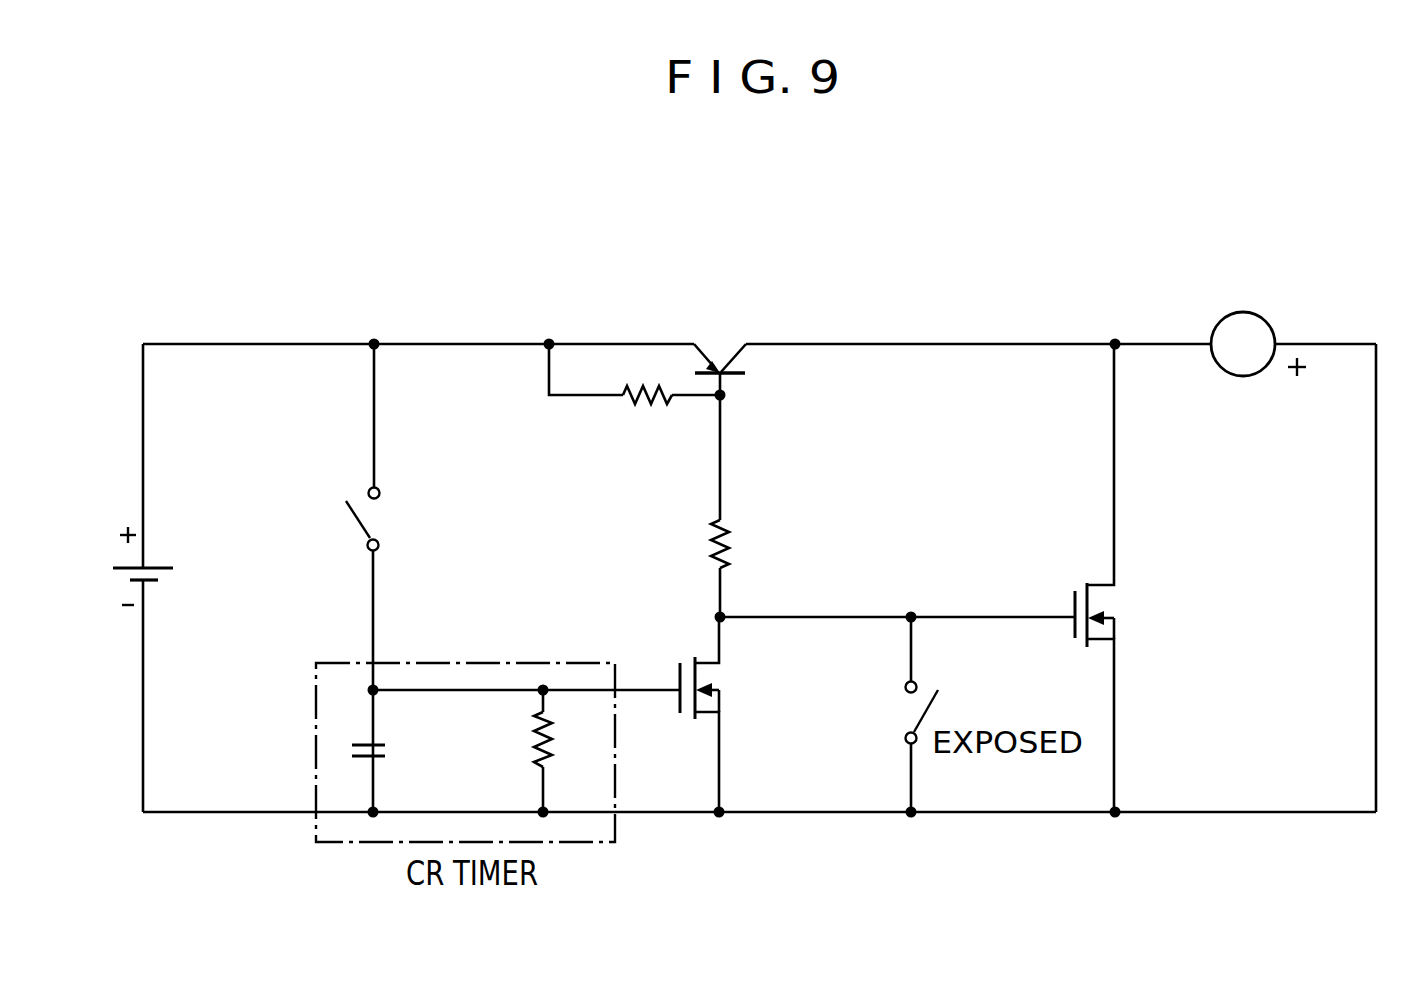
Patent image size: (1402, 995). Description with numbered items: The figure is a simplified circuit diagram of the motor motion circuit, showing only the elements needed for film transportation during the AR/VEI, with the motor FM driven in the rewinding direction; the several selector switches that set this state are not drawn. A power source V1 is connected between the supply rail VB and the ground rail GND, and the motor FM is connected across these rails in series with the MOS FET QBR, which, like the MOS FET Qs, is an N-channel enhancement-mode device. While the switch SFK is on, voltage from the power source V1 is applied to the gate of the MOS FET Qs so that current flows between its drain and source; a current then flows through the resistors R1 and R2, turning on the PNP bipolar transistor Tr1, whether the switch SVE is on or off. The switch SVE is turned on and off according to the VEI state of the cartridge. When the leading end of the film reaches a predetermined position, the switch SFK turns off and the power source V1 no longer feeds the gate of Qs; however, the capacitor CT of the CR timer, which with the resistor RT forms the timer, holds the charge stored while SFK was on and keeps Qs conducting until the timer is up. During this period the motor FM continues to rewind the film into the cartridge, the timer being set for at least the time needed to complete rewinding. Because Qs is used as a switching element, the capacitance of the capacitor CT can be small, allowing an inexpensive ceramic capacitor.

The battery voltage supply rail VB is at (175, 326).
The ground rail GND is at (206, 792).
The power source V1 is at (162, 566).
The switch SFK is at (386, 537).
The capacitor CT is at (394, 746).
The timer resistor RT is at (569, 743).
The transistor Tr1 is at (715, 355).
The resistor R1 is at (634, 396).
The resistor R2 is at (747, 544).
The MOS FET Qs is at (673, 664).
The switch SVE is at (909, 703).
The MOS FET QBR is at (1070, 581).
The motor FM is at (1249, 312).